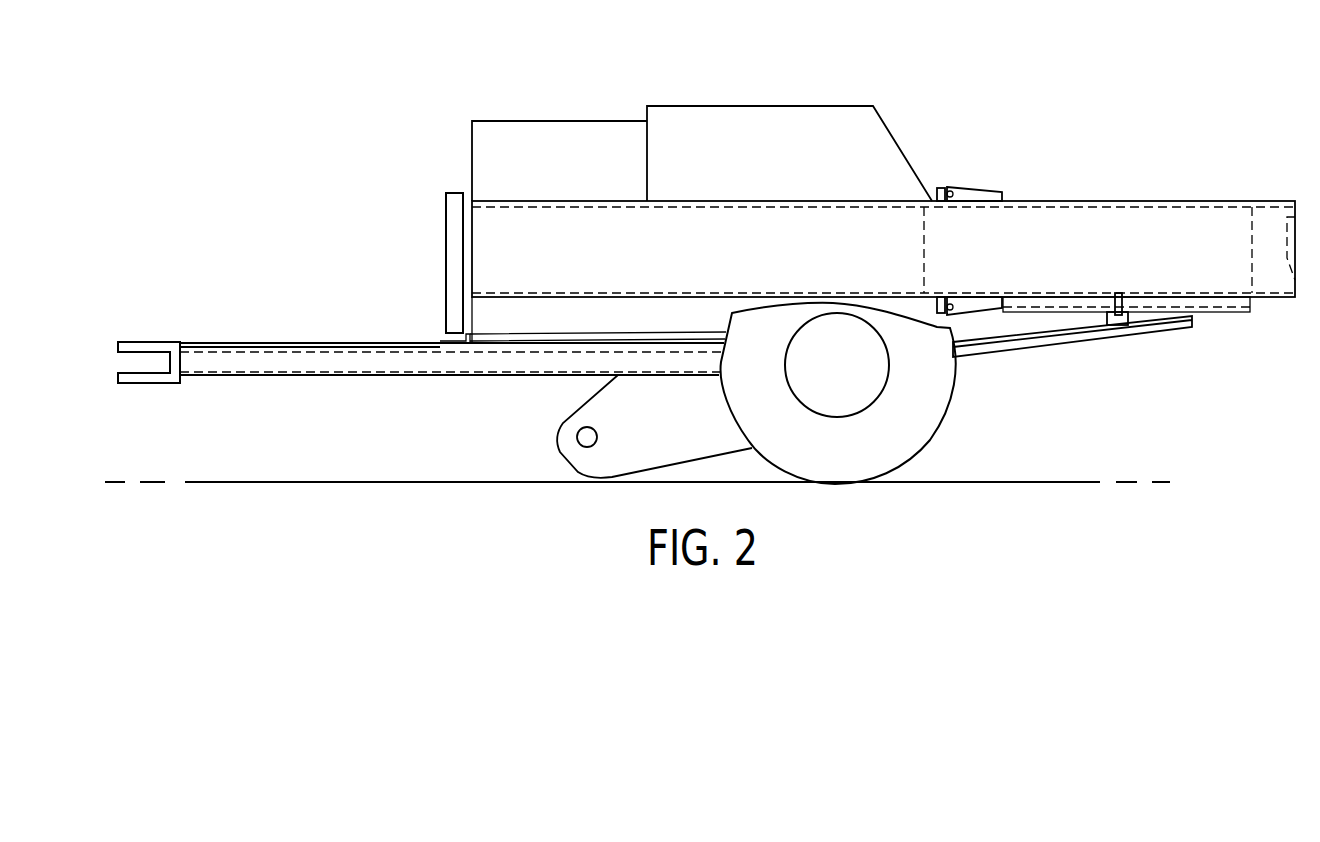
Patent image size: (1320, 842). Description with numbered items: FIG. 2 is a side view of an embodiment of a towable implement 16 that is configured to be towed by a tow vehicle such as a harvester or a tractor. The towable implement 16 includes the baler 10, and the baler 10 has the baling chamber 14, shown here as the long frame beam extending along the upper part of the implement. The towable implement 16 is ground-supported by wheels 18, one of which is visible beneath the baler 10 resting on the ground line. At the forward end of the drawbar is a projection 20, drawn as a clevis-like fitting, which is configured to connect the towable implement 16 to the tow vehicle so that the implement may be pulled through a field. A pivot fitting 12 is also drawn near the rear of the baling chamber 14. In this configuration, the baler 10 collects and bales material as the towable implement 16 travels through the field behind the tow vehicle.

The baler 10 is at (1088, 170).
The hinge 12 is at (966, 201).
The baling chamber 14 is at (1110, 257).
The towable implement 16 is at (807, 78).
The wheels 18 is at (912, 422).
The projection 20 is at (145, 383).